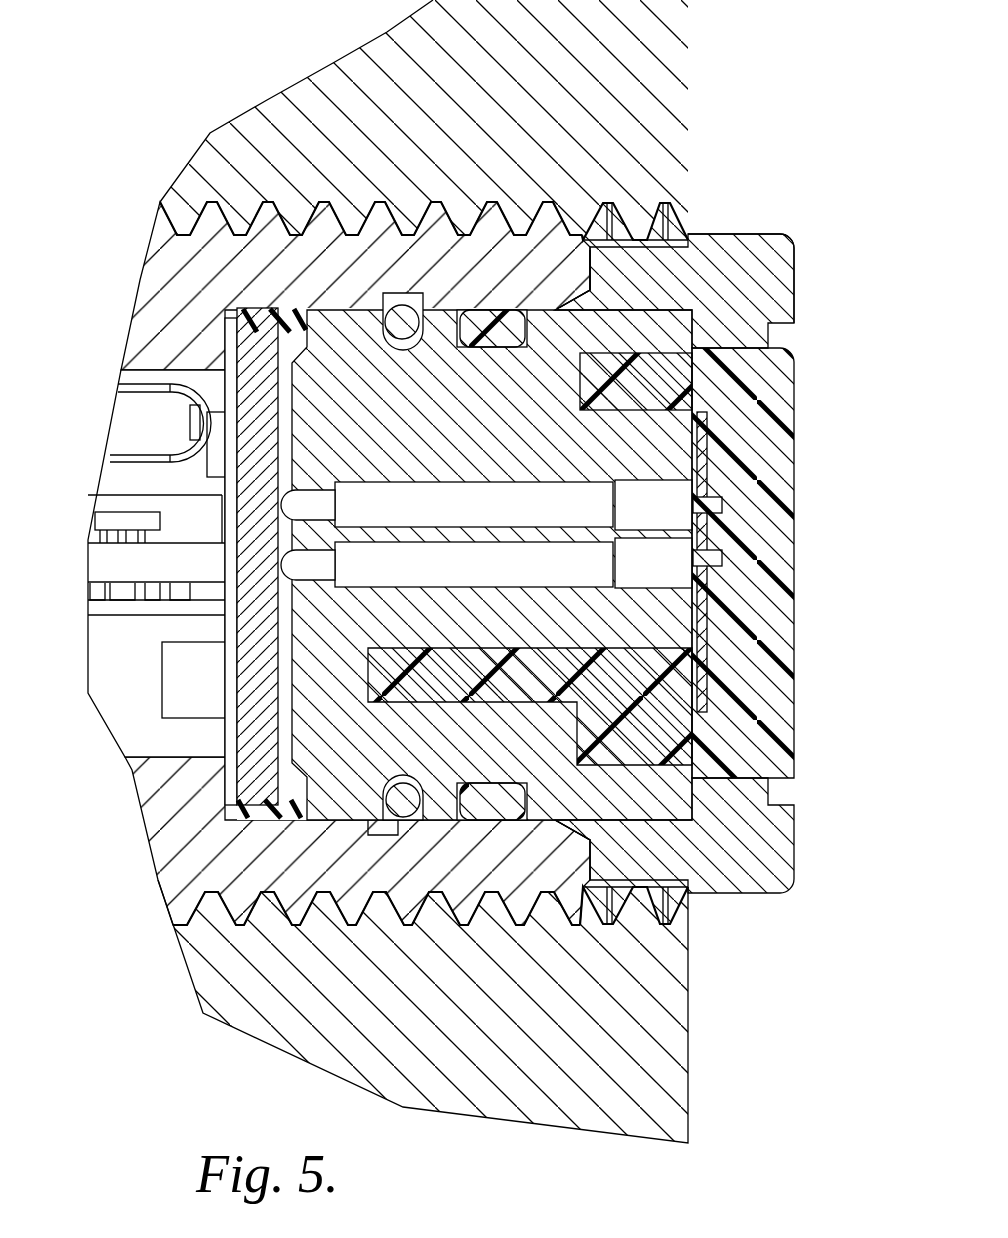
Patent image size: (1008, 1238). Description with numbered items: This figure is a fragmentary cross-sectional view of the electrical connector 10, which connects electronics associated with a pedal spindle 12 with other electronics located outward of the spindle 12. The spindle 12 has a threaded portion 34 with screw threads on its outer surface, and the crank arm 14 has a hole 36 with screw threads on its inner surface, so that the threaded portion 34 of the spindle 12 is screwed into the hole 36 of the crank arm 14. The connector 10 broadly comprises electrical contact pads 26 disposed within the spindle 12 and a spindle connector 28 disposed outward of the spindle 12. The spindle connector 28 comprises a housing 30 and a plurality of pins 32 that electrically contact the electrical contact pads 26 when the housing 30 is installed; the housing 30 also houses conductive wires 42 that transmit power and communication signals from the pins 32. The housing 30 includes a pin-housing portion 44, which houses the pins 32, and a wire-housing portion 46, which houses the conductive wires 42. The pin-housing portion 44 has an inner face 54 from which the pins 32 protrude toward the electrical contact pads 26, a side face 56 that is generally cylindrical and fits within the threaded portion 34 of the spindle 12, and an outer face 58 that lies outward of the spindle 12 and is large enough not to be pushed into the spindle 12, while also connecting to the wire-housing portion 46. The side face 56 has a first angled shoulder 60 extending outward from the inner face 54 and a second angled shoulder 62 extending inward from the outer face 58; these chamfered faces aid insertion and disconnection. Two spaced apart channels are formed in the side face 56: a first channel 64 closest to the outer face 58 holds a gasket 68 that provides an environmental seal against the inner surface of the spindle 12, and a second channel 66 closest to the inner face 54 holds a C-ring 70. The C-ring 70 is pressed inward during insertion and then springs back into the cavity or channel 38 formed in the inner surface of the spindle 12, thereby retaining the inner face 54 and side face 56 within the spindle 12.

The electrical connector 10 is at (762, 234).
The pedal spindle 12 is at (160, 236).
The crank arm 14 is at (668, 1056).
The electrical contact pads 26 is at (282, 510).
The spindle connector 28 is at (797, 404).
The housing 30 is at (778, 852).
The pins 32 is at (298, 503).
The threaded portion 34 is at (265, 222).
The hole 36 is at (625, 215).
The cavity or channel 38 is at (380, 303).
The conductive wires 42 is at (700, 640).
The pin-housing portion 44 is at (797, 256).
The wire-housing portion 46 is at (783, 576).
The inner face 54 is at (295, 733).
The side face 56 is at (540, 305).
The outer face 58 is at (797, 292).
The first angled shoulder 60 is at (305, 312).
The second angled shoulder 62 is at (565, 300).
The first channel 64 is at (502, 350).
The second channel 66 is at (402, 345).
The gasket 68 is at (490, 318).
The C-ring 70 is at (406, 306).